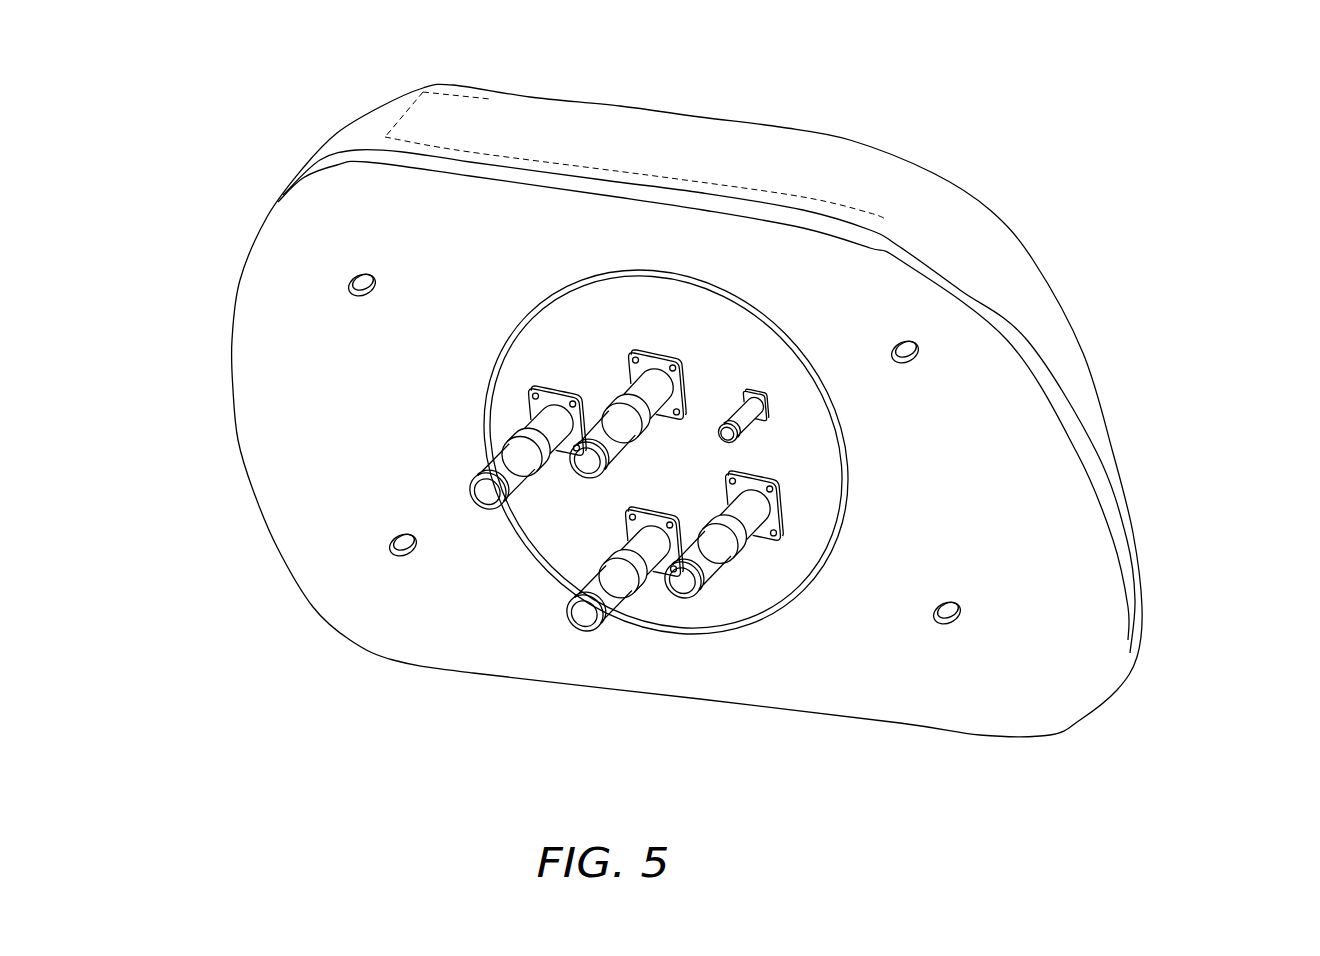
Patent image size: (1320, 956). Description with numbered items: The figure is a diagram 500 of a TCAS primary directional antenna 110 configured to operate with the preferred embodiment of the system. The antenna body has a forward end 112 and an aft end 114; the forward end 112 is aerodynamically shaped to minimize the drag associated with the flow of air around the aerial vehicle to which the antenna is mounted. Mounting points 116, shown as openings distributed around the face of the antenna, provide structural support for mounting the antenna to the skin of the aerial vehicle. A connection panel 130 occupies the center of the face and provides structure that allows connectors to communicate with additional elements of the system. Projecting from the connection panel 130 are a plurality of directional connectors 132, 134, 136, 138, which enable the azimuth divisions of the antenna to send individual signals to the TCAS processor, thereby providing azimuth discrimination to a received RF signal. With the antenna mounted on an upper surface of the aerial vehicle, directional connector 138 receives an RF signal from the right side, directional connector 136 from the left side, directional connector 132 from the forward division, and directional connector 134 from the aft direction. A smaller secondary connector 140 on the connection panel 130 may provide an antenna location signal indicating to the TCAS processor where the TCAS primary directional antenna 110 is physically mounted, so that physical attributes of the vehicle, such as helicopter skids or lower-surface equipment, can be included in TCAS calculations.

The connector assembly 500 is at (200, 235).
The TCAS primary directional antenna 110 is at (965, 223).
The forward end 112 is at (1122, 512).
The aft end 114 is at (230, 388).
The mounting points 116 is at (400, 548).
The connection panel 130 is at (727, 347).
The directional connector 132 is at (683, 585).
The directional connector 134 is at (480, 500).
The directional connector 136 is at (580, 617).
The directional connector 138 is at (582, 465).
The secondary connector 140 is at (745, 425).